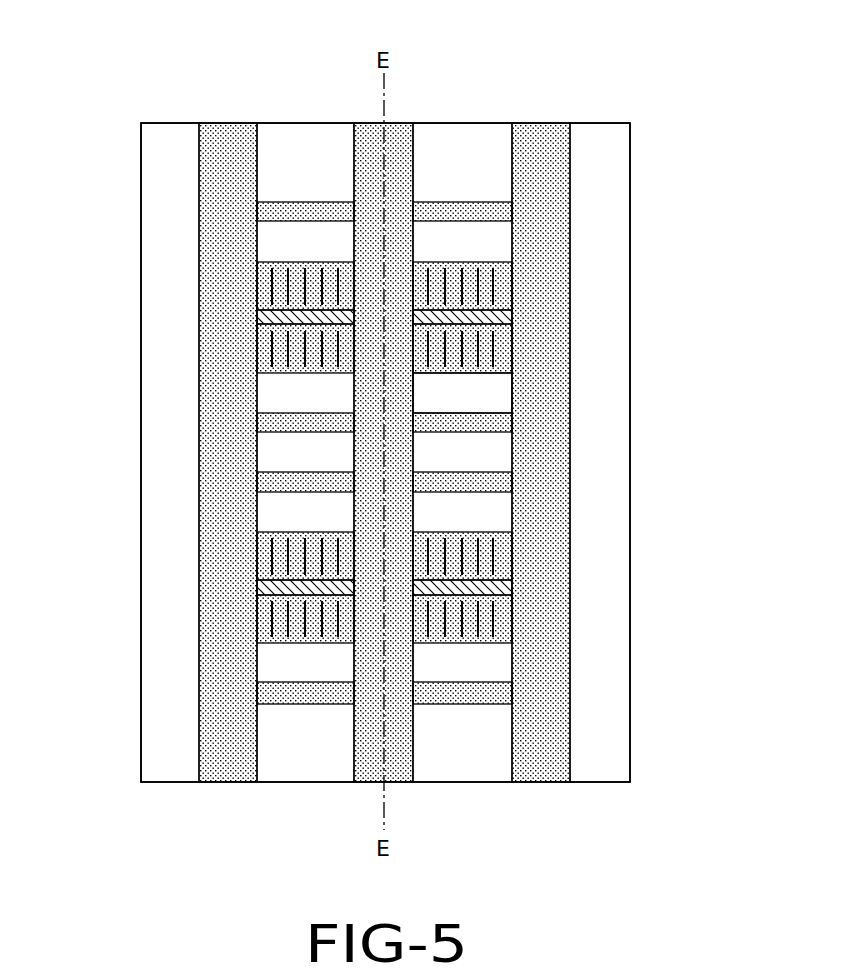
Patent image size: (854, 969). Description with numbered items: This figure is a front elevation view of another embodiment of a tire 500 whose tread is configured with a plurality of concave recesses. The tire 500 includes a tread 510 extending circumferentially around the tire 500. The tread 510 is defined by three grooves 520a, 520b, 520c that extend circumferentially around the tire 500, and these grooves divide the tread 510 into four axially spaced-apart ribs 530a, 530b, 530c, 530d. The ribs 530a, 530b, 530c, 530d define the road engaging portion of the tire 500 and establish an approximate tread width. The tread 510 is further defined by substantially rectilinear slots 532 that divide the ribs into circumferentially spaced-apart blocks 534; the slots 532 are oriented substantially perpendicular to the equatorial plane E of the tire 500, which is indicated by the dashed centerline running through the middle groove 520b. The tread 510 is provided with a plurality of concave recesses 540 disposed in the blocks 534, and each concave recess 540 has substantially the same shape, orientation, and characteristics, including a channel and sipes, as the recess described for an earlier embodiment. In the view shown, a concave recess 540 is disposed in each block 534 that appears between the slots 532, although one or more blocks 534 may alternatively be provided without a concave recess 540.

The tire 500 is at (577, 83).
The tread 510 is at (466, 146).
The groove 520a is at (232, 768).
The groove 520b is at (402, 770).
The groove 520c is at (550, 746).
The rib 530a is at (160, 742).
The rib 530b is at (307, 763).
The rib 530c is at (471, 769).
The rib 530d is at (607, 633).
The slot 532 is at (502, 212).
The block 534 is at (497, 390).
The concave recess 540 is at (508, 288).